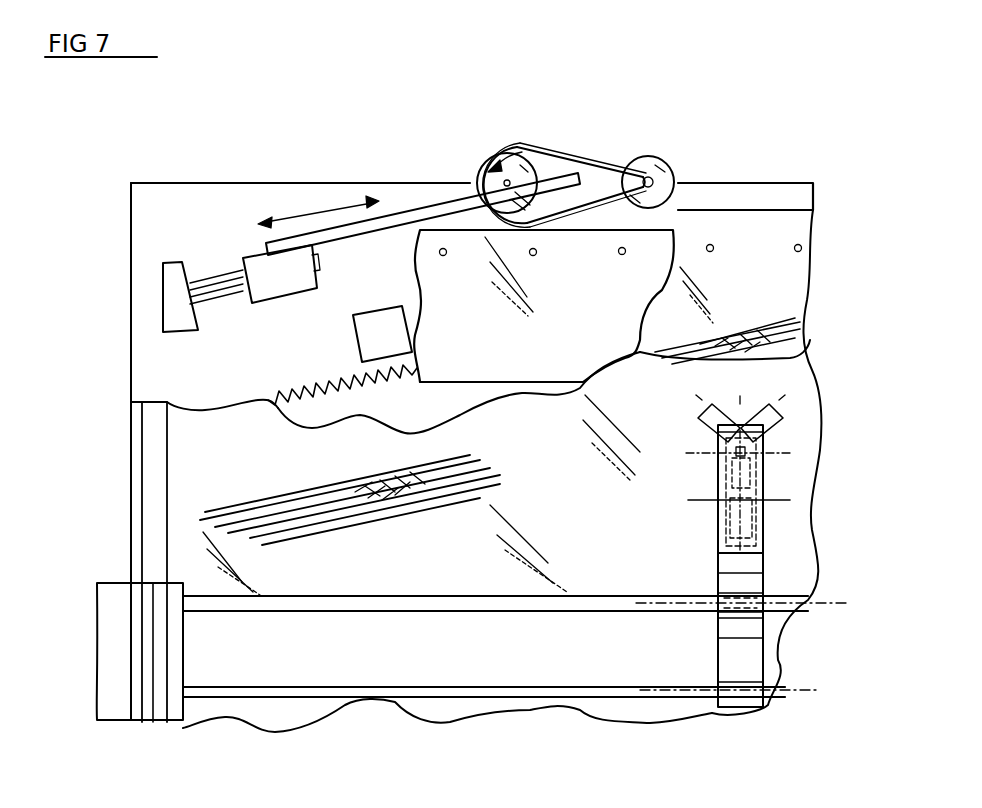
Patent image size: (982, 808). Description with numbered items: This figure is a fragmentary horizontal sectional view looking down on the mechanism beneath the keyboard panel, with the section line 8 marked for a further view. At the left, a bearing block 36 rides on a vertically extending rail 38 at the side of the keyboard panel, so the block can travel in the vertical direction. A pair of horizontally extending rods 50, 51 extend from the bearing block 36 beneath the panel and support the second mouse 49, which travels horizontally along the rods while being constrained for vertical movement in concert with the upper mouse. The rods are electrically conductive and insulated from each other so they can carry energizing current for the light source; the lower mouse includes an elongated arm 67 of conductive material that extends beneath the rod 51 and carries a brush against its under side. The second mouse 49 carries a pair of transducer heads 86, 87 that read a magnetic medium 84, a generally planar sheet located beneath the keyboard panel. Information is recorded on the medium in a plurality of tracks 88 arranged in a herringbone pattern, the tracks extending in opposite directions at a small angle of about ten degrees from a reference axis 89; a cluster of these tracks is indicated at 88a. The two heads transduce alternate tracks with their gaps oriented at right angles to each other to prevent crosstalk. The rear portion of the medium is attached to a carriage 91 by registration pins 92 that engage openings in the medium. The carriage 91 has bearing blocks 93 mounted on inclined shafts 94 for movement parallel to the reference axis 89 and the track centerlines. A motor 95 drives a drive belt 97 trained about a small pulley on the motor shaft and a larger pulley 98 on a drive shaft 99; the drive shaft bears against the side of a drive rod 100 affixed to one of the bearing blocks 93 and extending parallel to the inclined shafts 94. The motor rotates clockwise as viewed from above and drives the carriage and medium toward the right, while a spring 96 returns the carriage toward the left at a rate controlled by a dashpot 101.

The section line 8- 8 is at (688, 63).
The bearing block 36 is at (120, 595).
The vertically extending rail 38 is at (153, 475).
The second mouse 49 is at (775, 492).
The horizontally extending rod 50 is at (517, 690).
The horizontally extending rod 51 is at (362, 603).
The elongated arm 67 is at (745, 667).
The magnetic medium 84 is at (775, 302).
The transducer head 86 is at (712, 418).
The transducer head 87 is at (782, 417).
The track 88 is at (800, 357).
The strand cluster 88a is at (373, 510).
The reference axis 89 is at (318, 490).
The carriage 91 is at (490, 363).
The registration pin 92 is at (534, 256).
The bearing block 93 is at (262, 263).
The inclined shaft 94 is at (200, 270).
The motor 95 is at (652, 158).
The spring 96 is at (275, 397).
The drive belt 97 is at (568, 150).
The larger pulley 98 is at (478, 163).
The drive shaft 99 is at (525, 160).
The drive rod 100 is at (412, 203).
The dashpot 101 is at (392, 340).